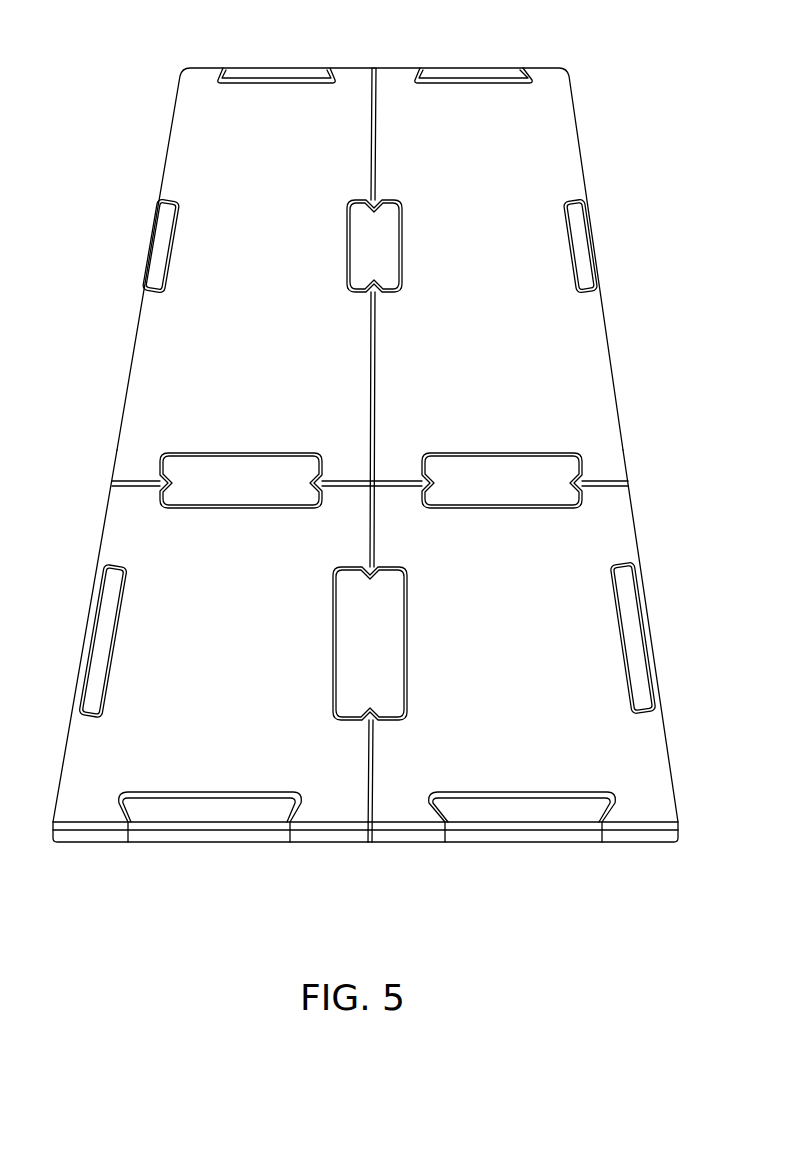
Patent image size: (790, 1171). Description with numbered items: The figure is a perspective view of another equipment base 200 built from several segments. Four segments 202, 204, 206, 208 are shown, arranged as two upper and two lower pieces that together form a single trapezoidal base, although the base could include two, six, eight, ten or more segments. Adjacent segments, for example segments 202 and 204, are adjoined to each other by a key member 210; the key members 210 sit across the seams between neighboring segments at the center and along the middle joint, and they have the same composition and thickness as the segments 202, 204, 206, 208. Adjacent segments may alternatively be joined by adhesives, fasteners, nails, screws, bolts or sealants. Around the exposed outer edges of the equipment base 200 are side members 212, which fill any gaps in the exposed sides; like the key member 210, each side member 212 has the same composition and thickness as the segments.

The equipment base 200 is at (620, 78).
The segment 202 is at (210, 152).
The segment 204 is at (548, 152).
The segment 206 is at (600, 540).
The segment 208 is at (135, 540).
The key member 210 is at (385, 247).
The side member 212 is at (280, 70).